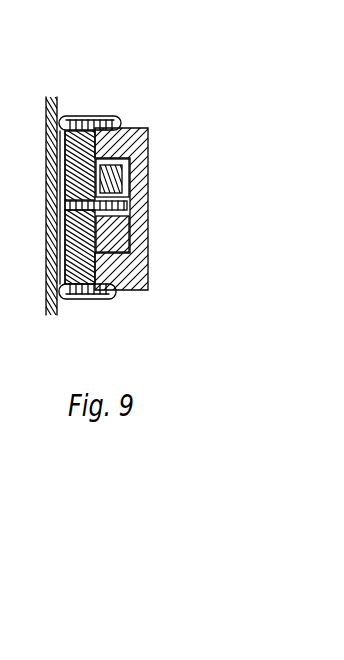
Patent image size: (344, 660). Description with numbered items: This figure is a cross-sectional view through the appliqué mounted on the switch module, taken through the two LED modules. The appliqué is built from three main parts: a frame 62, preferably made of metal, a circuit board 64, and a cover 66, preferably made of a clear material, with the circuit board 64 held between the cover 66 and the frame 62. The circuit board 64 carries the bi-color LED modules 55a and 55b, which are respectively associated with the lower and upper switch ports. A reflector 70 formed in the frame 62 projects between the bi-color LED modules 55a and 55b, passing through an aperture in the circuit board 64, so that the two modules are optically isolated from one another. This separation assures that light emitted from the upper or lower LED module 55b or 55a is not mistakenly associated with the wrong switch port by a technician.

The frame 62 is at (108, 128).
The circuit board 64 is at (83, 143).
The bi-color LED module 55b is at (120, 179).
The reflector 70 is at (150, 184).
The cover 66 is at (150, 240).
The bi-color LED module 55a is at (111, 225).